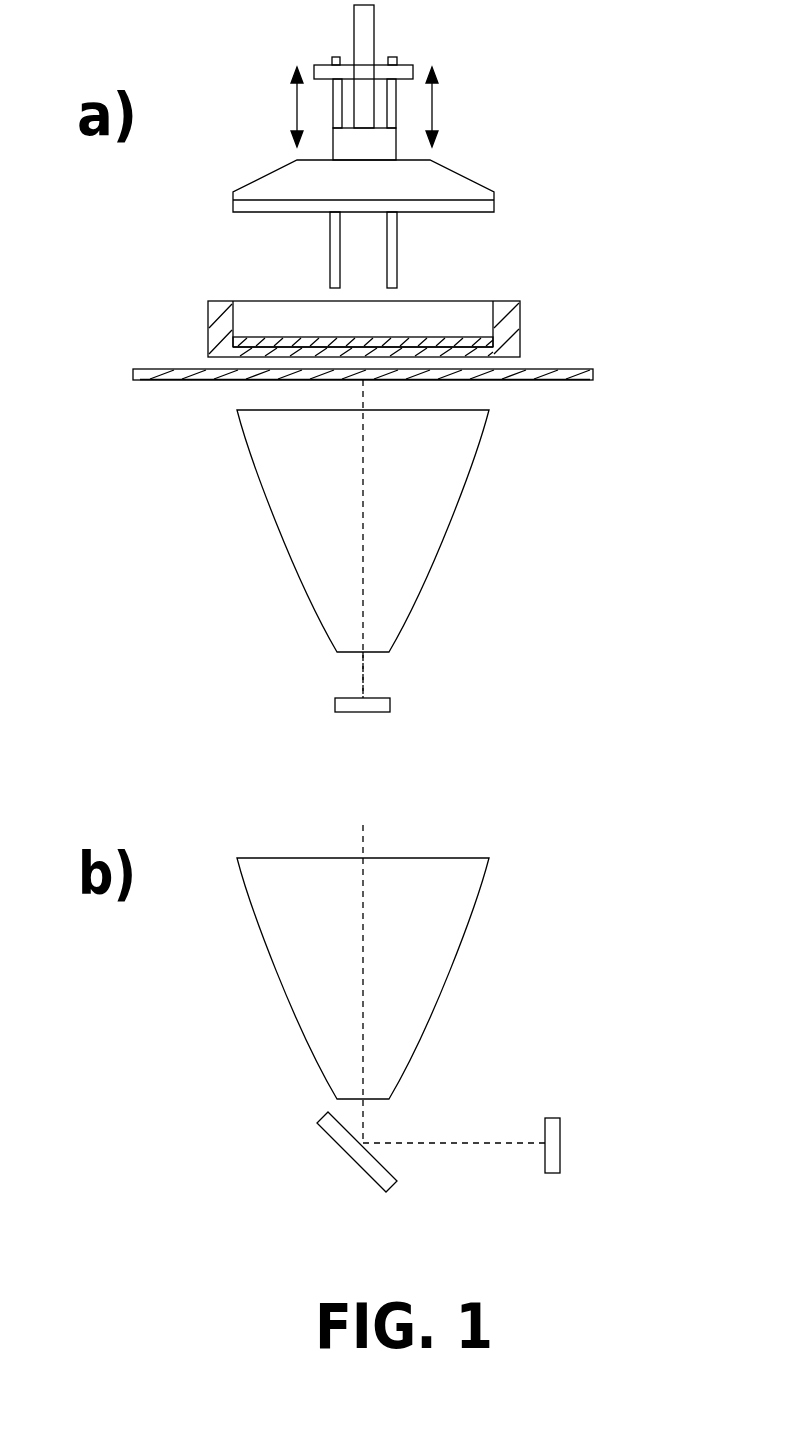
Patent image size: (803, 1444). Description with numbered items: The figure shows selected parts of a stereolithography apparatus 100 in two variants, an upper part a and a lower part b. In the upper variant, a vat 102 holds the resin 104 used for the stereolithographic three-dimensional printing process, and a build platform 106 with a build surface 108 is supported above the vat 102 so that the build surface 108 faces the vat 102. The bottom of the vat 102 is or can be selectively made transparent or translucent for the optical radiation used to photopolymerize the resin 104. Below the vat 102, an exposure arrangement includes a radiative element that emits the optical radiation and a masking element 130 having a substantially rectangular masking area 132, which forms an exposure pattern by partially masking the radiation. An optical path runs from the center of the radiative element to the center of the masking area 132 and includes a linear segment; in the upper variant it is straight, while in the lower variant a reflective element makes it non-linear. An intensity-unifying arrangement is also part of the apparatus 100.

The stereolithography apparatus 100 is at (440, 145).
The vat 102 is at (399, 291).
The resin 104 is at (260, 337).
The build platform 106 is at (462, 176).
The build surface 108 is at (441, 213).
The masking element 130 is at (380, 412).
The masking area 132 is at (250, 380).